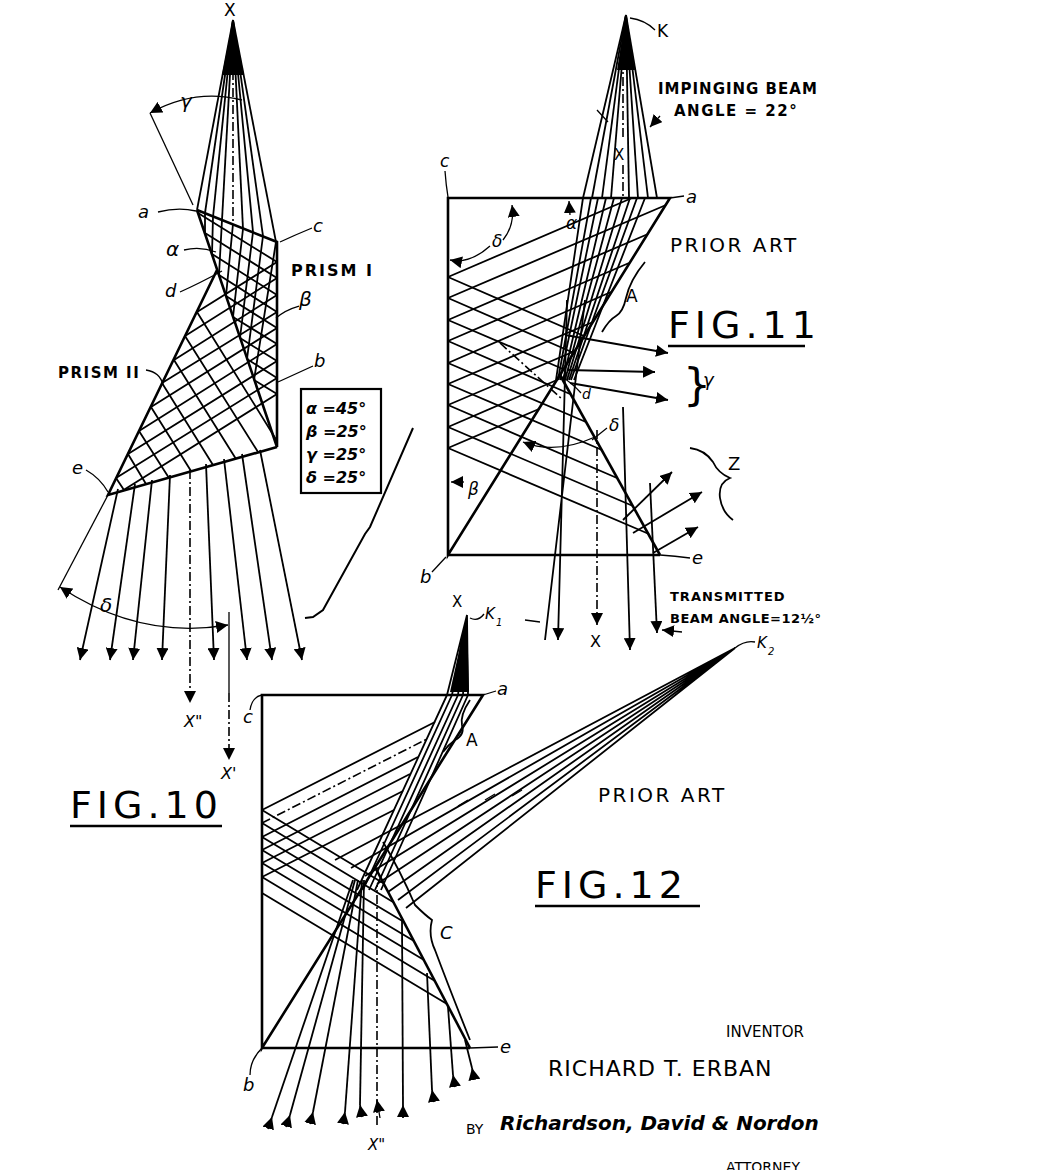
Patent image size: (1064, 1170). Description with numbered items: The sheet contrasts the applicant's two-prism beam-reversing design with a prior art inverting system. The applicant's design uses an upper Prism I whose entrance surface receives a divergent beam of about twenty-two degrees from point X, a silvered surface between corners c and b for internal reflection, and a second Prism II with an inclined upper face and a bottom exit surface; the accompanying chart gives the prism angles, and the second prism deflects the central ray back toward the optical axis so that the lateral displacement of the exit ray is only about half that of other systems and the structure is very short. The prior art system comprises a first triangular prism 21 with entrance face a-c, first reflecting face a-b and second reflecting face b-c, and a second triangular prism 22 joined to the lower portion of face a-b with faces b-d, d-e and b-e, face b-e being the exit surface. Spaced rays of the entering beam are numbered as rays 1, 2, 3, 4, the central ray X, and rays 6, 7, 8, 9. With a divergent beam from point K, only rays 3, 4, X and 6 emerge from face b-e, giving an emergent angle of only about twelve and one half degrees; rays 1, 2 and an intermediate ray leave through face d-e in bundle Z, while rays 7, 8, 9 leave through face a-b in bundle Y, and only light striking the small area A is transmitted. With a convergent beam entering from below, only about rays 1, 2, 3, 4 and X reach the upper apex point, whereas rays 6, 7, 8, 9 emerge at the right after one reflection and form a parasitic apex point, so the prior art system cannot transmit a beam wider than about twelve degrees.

In FIG. 11, the first triangular prism 21 is at (487, 208).
In FIG. 12, the first triangular prism 21 is at (275, 930).
In FIG. 11, the second triangular prism 22 is at (602, 490).
In FIG. 12, the second triangular prism 22 is at (440, 1018).
In FIG. 10, the ray 1 is at (249, 353).
In FIG. 11, the ray 1 is at (631, 267).
In FIG. 12, the ray 1 is at (445, 705).
In FIG. 10, the ray 2 is at (240, 353).
In FIG. 11, the ray 2 is at (660, 284).
In FIG. 12, the ray 2 is at (450, 700).
In FIG. 10, the ray 3 is at (232, 353).
In FIG. 11, the ray 3 is at (628, 324).
In FIG. 12, the ray 3 is at (449, 692).
In FIG. 10, the ray 4 is at (219, 353).
In FIG. 11, the ray 4 is at (619, 332).
In FIG. 12, the ray 4 is at (455, 670).
In FIG. 10, the ray 6 is at (200, 353).
In FIG. 11, the ray 6 is at (590, 327).
In FIG. 12, the ray 6 is at (383, 995).
In FIG. 10, the ray 7 is at (190, 353).
In FIG. 11, the ray 7 is at (620, 215).
In FIG. 12, the ray 7 is at (385, 992).
In FIG. 10, the ray 8 is at (183, 353).
In FIG. 11, the ray 8 is at (617, 200).
In FIG. 12, the ray 8 is at (391, 985).
In FIG. 10, the ray 9 is at (173, 353).
In FIG. 11, the ray 9 is at (622, 191).
In FIG. 12, the ray 9 is at (373, 999).